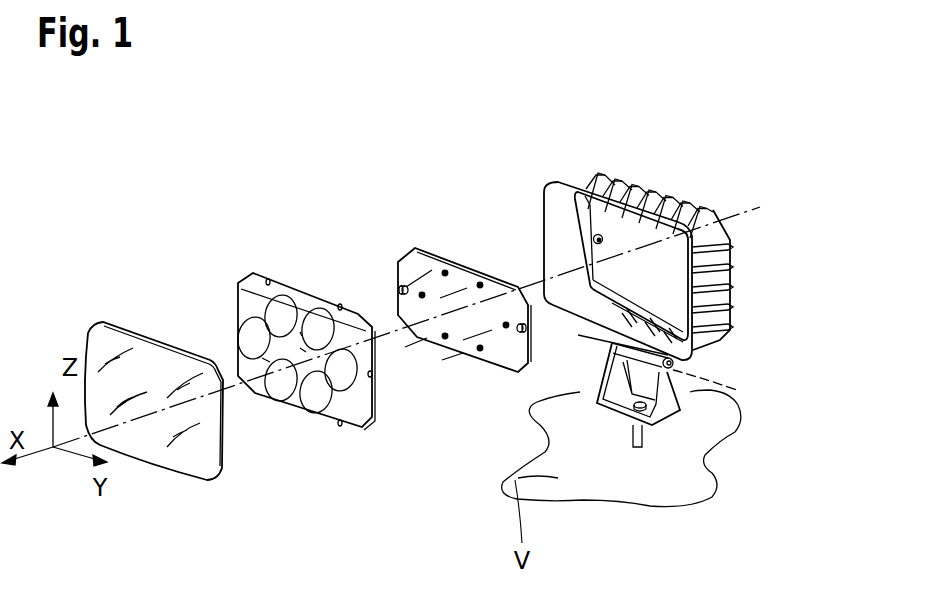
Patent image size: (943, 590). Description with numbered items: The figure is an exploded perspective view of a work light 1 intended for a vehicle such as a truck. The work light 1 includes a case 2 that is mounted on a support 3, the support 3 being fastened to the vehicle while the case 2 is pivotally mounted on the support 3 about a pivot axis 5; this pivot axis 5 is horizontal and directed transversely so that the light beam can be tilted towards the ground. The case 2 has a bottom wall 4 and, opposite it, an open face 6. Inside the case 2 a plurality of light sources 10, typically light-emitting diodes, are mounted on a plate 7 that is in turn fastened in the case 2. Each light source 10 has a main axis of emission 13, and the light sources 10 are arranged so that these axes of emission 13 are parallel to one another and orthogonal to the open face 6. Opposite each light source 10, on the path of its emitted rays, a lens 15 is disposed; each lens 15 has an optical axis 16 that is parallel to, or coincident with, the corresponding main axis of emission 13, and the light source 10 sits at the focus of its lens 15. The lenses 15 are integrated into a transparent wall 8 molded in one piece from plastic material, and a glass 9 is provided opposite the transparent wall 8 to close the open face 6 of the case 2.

The work light 1 is at (367, 190).
The case 2 is at (700, 220).
The support 3 is at (614, 383).
The bottom wall 4 is at (597, 208).
The pivot axis 5 is at (737, 390).
The open face 6 is at (560, 247).
The plate 7 is at (513, 313).
The transparent wall 8 is at (253, 297).
The glass 9 is at (100, 343).
The light sources 10 is at (420, 293).
The main axis of emission 13 is at (397, 305).
The lens 15 is at (250, 328).
The optical axis 16 is at (240, 353).